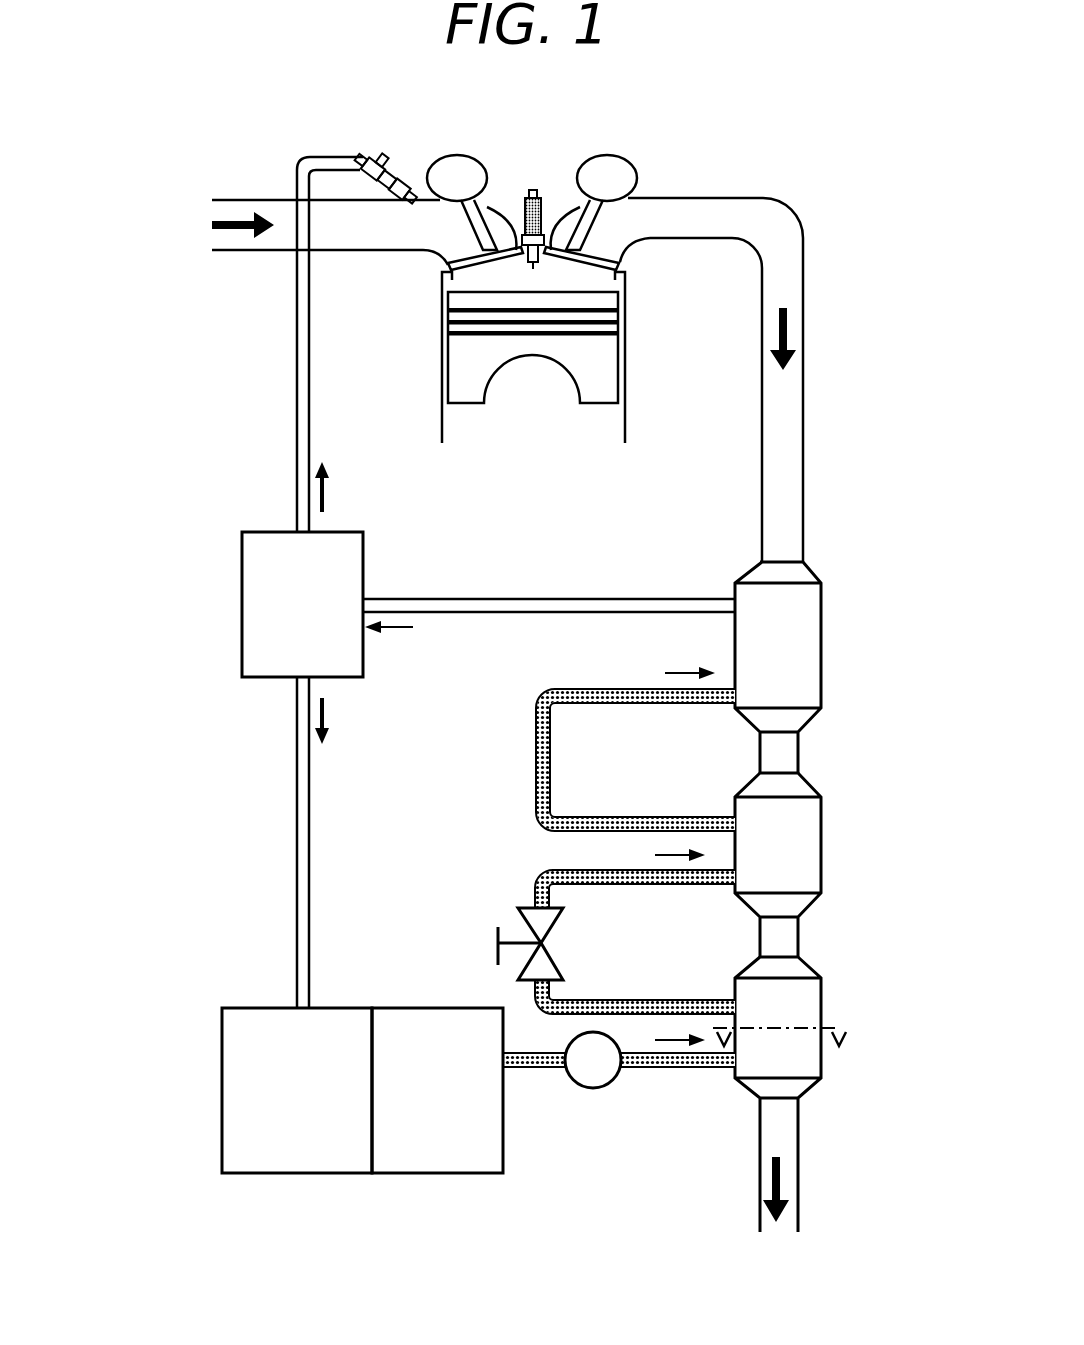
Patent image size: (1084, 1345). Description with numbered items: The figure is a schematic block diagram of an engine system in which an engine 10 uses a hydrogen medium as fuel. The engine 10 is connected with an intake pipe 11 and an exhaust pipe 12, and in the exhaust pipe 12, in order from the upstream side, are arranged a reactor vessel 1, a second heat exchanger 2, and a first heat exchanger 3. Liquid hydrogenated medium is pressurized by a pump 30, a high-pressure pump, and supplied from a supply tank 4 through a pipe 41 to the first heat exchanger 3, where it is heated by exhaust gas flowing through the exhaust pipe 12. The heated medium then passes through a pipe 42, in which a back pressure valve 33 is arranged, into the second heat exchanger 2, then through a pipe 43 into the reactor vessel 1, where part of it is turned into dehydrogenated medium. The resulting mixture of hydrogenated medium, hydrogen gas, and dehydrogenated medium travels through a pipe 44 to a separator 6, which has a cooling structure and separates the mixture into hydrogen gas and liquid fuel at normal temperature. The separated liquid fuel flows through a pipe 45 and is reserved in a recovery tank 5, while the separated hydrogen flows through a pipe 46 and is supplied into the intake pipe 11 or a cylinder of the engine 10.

The reactor vessel 1 is at (818, 630).
The second heat exchanger 2 is at (818, 822).
The first heat exchanger 3 is at (816, 994).
The supply tank 4 is at (457, 1175).
The recovery tank 5 is at (305, 1175).
The separator 6 is at (242, 578).
The engine 10 is at (440, 375).
The intake pipe 11 is at (260, 200).
The exhaust pipe 12 is at (748, 198).
The pump 30 is at (590, 1088).
The back pressure valve 33 is at (498, 943).
The pipe 41 is at (683, 1068).
The pipe 42 is at (691, 885).
The pipe 43 is at (695, 705).
The pipe 44 is at (402, 598).
The pipe 45 is at (297, 738).
The pipe 46 is at (297, 412).